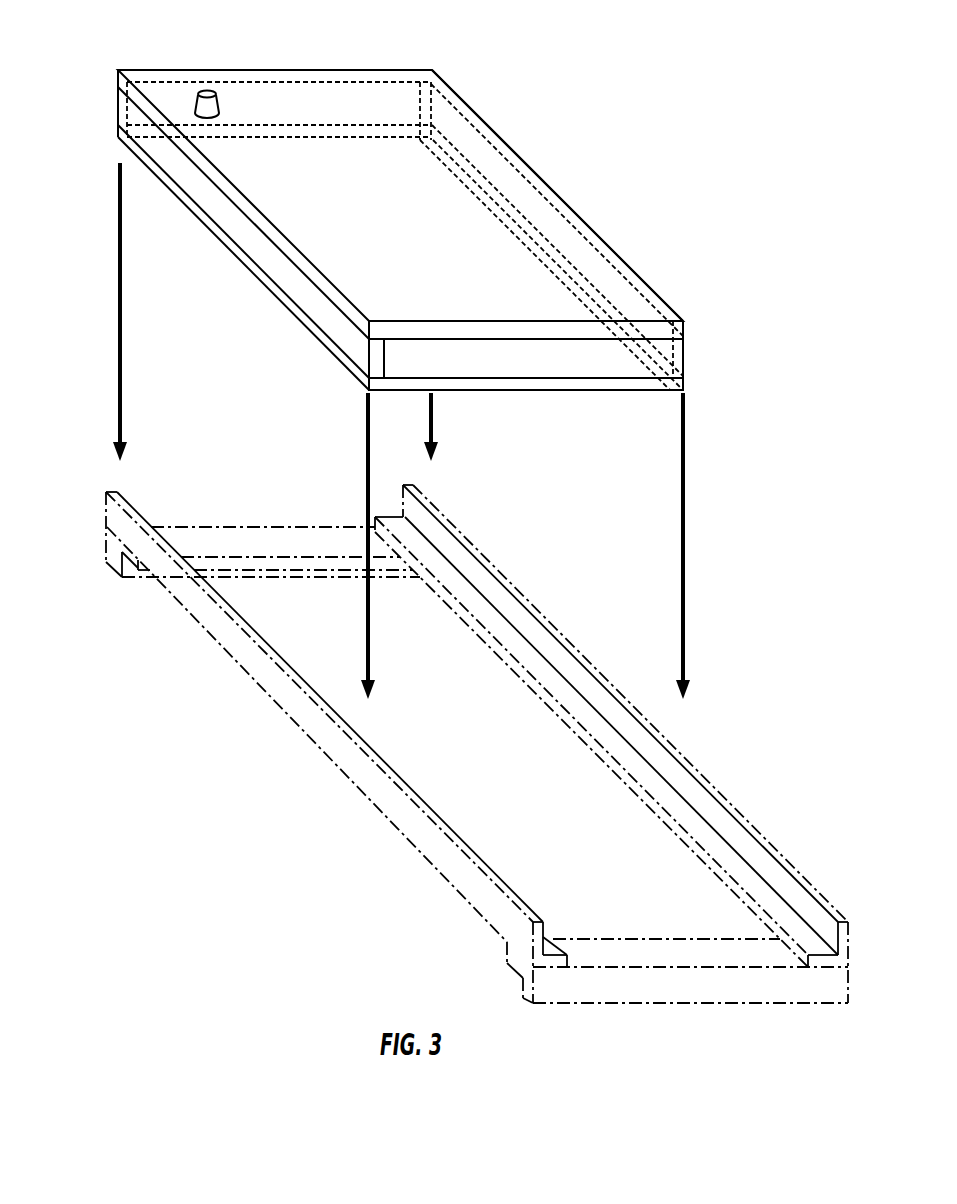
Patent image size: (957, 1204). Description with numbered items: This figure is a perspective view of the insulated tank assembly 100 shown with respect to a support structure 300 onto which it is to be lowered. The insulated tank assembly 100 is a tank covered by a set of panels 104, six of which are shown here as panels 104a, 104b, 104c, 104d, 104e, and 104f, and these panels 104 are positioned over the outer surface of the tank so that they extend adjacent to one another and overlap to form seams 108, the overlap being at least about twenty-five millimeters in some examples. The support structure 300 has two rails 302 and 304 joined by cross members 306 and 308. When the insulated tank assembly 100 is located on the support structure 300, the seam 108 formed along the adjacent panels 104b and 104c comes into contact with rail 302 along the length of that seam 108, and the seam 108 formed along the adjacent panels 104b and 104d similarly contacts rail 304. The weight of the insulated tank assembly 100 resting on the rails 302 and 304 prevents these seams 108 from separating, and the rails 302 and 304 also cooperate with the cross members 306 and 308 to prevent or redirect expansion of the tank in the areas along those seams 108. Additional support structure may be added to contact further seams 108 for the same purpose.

The insulated tank assembly 100 is at (568, 62).
The panels 104 is at (490, 163).
The panel 104a is at (293, 98).
The panel 104b is at (568, 392).
The panel 104c is at (254, 250).
The panel 104d is at (580, 214).
The panel 104e is at (116, 96).
The panel 104f is at (448, 363).
The seams 108 is at (389, 76).
The support structure 300 is at (268, 736).
The rail 302 is at (445, 853).
The rail 304 is at (528, 605).
The cross member 306 is at (680, 987).
The cross member 308 is at (275, 550).